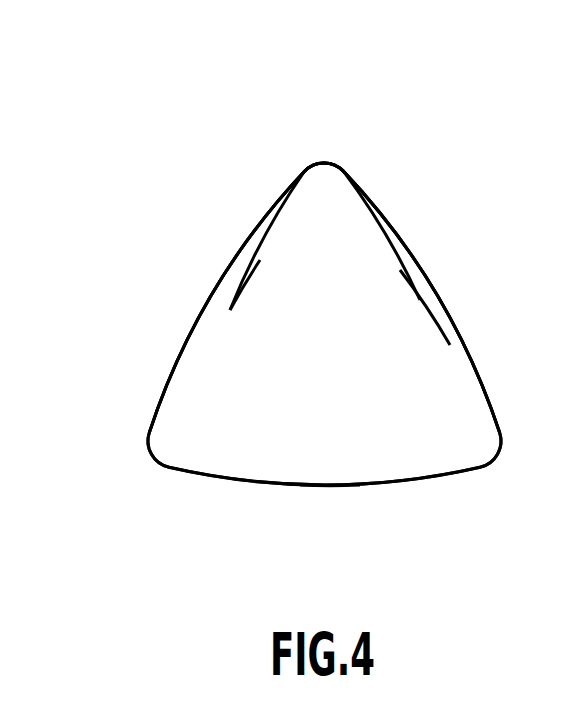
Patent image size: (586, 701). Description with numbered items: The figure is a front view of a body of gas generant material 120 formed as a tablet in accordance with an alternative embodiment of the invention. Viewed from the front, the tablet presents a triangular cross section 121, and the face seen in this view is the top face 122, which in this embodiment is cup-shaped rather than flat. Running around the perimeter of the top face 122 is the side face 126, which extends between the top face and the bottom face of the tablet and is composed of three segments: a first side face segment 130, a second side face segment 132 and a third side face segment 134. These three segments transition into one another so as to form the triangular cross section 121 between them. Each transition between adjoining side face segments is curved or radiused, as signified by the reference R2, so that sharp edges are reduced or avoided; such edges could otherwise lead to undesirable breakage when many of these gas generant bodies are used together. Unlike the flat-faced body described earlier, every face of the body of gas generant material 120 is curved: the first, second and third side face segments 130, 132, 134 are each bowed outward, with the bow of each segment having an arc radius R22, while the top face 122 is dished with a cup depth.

The body of gas generant material 120 is at (504, 133).
The triangular cross section 121 is at (175, 372).
The top face 122 is at (260, 292).
The side face 126 is at (488, 367).
The first side face segment 130 is at (272, 208).
The second side face segment 132 is at (395, 485).
The third side face segment 134 is at (381, 213).
The transition radius R2 is at (102, 523).
The arc radius R22 is at (510, 247).